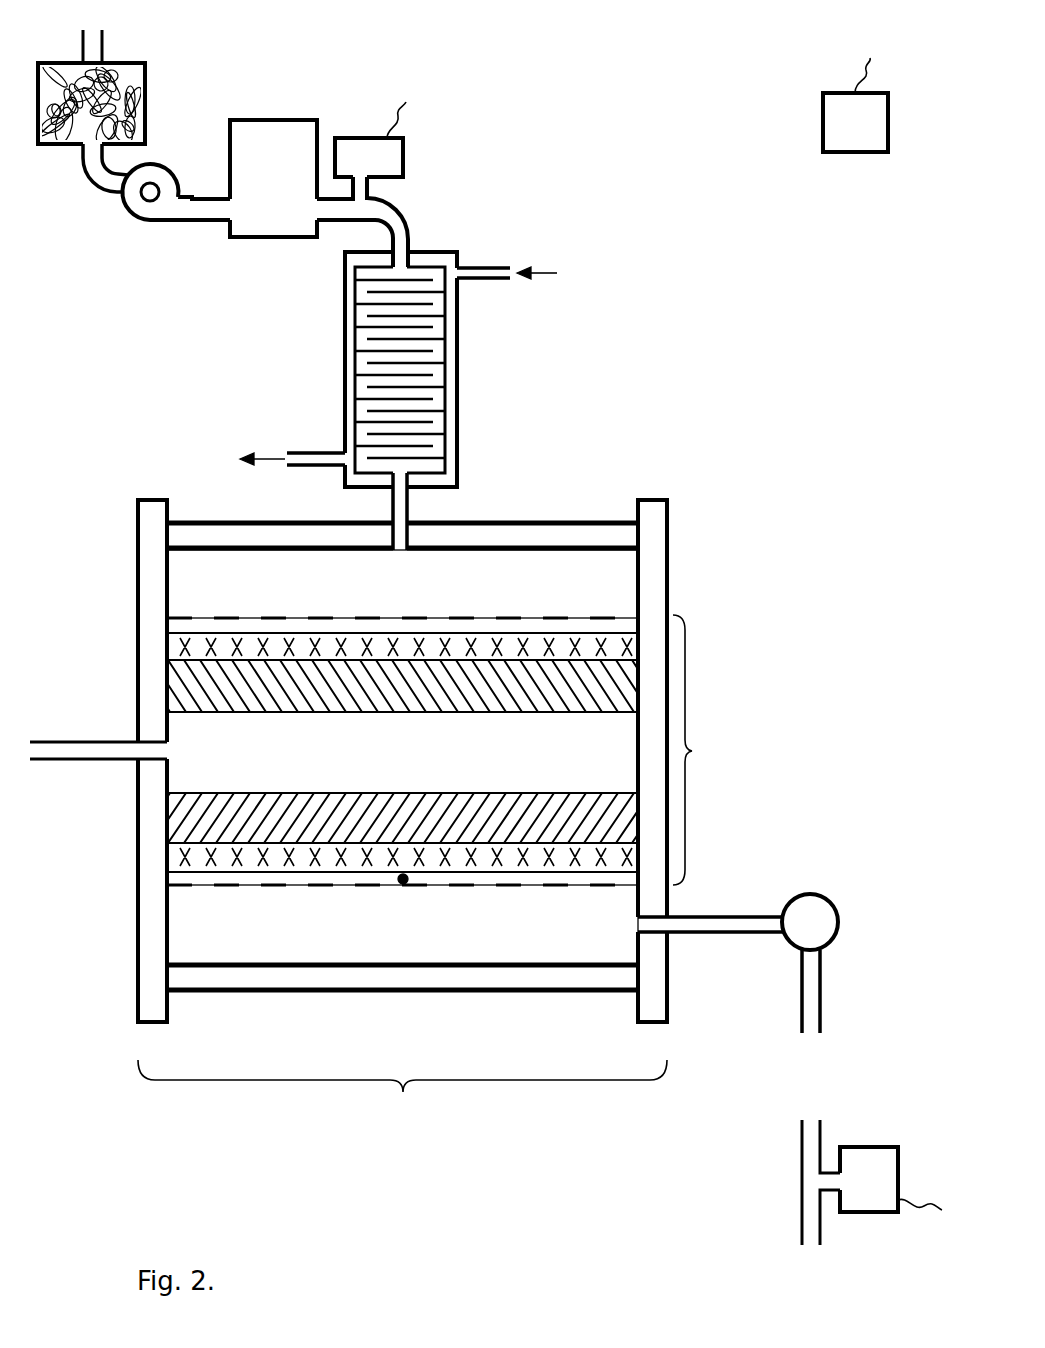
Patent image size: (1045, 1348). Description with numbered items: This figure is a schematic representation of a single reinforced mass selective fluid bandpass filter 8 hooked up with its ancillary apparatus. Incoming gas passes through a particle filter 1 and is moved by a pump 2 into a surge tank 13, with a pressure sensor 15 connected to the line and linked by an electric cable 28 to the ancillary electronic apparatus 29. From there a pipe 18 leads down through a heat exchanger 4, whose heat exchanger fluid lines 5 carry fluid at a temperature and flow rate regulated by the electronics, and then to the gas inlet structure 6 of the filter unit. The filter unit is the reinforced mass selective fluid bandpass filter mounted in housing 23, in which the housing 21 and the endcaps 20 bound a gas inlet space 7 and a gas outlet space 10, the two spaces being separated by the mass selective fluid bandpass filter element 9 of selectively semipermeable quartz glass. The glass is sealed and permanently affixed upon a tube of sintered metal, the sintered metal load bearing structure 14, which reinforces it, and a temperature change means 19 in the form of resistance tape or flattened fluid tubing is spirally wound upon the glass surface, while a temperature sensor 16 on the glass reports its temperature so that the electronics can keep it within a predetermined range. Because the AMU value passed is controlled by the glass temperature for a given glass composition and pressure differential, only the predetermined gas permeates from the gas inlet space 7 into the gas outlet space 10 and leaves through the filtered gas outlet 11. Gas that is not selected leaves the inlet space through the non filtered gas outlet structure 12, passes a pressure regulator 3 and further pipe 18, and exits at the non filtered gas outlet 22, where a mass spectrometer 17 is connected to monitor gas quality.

The particle filter 1 is at (110, 64).
The pump 2 is at (158, 163).
The surge tank 13 is at (245, 120).
The pressure sensor 15 is at (345, 138).
The electric cable 28 is at (406, 102).
The ancillary electronic apparatus 29 is at (888, 124).
The pipe 18 is at (400, 212).
The heat exchanger 4 is at (345, 338).
The heat exchanger fluid lines 5 is at (477, 270).
The gas inlet structure 6 is at (393, 506).
The endcap 20 is at (658, 498).
The housing 21 is at (483, 522).
The gas inlet space 7 is at (490, 567).
The temperature change means 19 is at (503, 615).
The mass selective fluid bandpass filter element 9 is at (540, 632).
The sintered metal load bearing structure 14 is at (170, 677).
The reinforced mass selective fluid bandpass filter 8 is at (695, 750).
The filtered gas outlet 11 is at (75, 740).
The gas outlet space 10 is at (173, 777).
The non filtered gas outlet structure 12 is at (692, 913).
The pressure regulator 3 is at (830, 902).
The non filtered gas outlet 22 is at (800, 1232).
The mass spectrometer 17 is at (898, 1163).
The temperature sensor 16 is at (403, 884).
The reinforced mass selective fluid bandpass filter mounted in housing 23 is at (402, 1092).